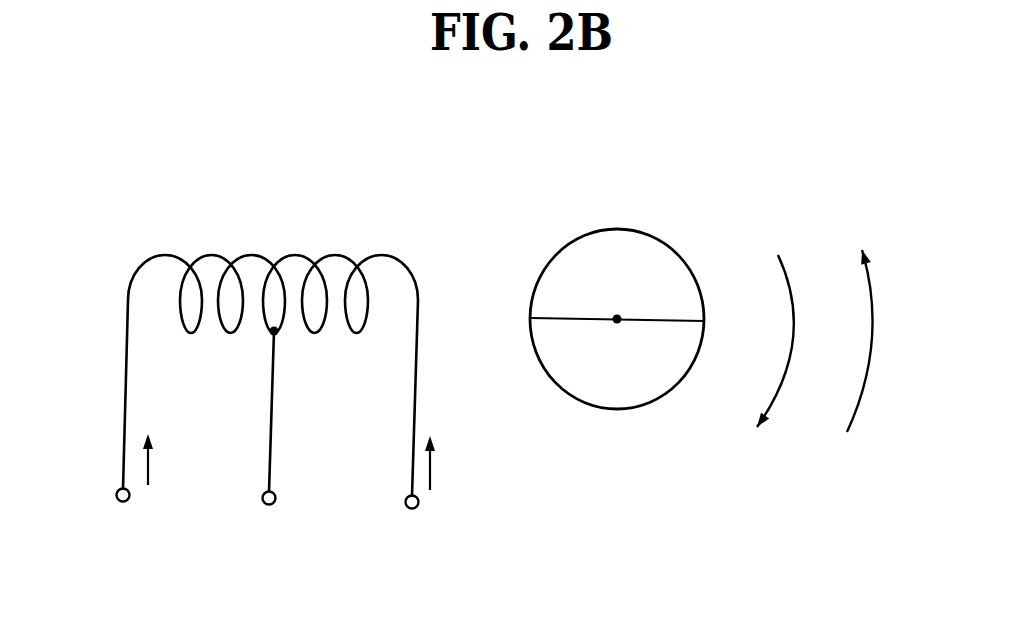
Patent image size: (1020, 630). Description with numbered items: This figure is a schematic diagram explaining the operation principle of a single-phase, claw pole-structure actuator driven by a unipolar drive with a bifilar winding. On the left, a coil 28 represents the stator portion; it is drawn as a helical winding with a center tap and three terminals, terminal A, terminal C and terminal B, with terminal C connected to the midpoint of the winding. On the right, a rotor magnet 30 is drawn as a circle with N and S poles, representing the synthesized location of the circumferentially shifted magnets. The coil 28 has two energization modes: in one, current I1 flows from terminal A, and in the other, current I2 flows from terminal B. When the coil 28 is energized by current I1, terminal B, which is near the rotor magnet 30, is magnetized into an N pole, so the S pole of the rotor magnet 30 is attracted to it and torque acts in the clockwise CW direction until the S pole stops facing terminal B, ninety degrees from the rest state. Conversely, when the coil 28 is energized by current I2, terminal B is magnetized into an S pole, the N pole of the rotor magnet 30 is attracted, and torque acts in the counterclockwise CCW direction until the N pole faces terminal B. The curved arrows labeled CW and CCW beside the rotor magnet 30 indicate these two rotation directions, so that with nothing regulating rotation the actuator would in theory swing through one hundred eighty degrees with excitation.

The coil 28 is at (306, 258).
The rotor magnet 30 is at (622, 230).
The terminal A is at (123, 517).
The terminal B is at (412, 523).
The terminal C is at (269, 520).
The current I1 is at (149, 441).
The current I2 is at (432, 442).
The clockwise direction CW is at (759, 359).
The counterclockwise direction CCW is at (862, 323).